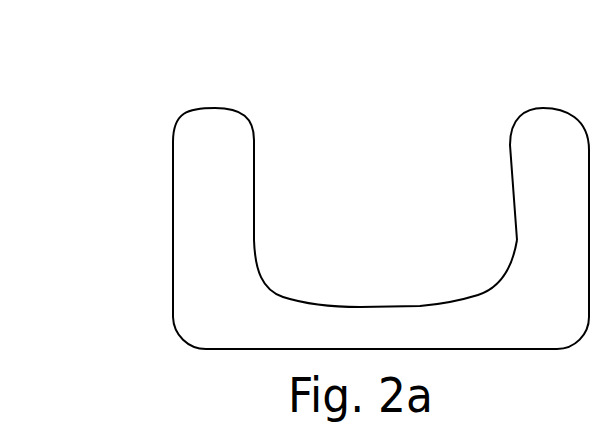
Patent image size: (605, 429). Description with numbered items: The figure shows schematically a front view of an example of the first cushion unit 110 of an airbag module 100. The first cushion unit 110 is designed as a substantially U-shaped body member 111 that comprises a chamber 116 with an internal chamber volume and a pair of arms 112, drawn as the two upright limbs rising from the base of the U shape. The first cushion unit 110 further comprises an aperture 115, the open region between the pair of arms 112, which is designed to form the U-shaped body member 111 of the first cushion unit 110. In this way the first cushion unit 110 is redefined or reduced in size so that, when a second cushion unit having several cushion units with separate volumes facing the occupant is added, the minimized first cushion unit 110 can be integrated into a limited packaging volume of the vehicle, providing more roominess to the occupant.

The airbag module 100 is at (310, 180).
The first cushion unit 110 is at (199, 295).
The U-shaped body member 111 is at (473, 295).
The pair of arms 112 is at (172, 161).
The aperture 115 is at (385, 212).
The chamber 116 is at (392, 318).